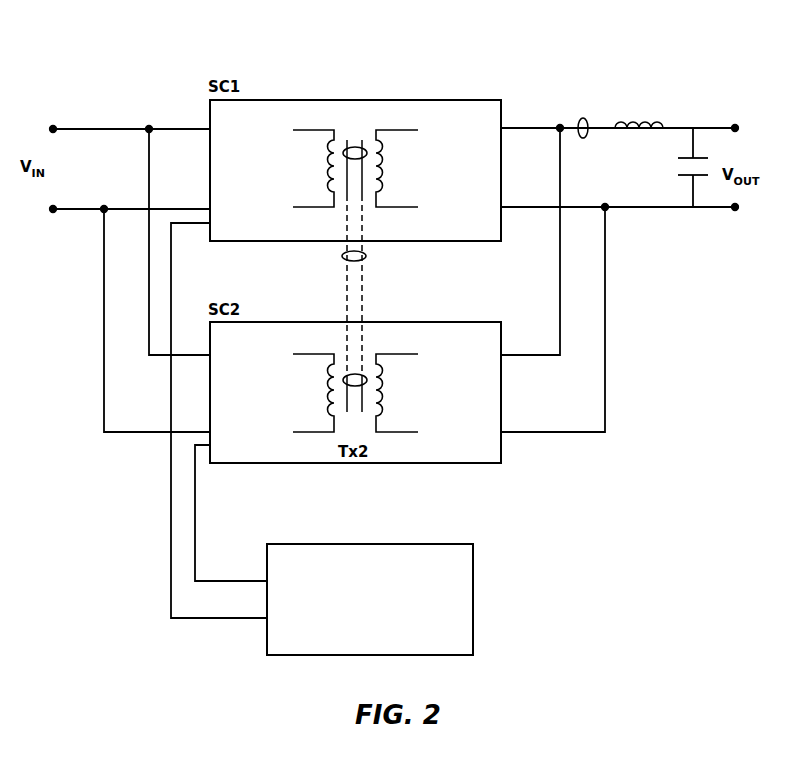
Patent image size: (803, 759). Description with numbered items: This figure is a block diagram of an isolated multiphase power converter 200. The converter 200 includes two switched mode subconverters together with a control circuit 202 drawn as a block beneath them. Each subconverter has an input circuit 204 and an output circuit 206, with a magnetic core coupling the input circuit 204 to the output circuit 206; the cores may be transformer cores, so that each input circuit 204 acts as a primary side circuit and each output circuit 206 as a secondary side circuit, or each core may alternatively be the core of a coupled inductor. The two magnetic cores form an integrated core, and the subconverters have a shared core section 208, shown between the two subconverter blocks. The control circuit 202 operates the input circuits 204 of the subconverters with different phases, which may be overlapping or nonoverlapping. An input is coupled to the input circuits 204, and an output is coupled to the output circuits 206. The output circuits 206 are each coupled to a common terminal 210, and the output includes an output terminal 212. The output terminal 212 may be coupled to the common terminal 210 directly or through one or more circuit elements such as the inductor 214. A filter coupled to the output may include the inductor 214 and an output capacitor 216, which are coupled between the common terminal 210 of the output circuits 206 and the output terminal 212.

The multiphase power converter 200 is at (556, 60).
The control circuit 202 is at (473, 595).
The input circuit 204 is at (263, 128).
The output circuit 206 is at (455, 126).
The shared core section 208 is at (366, 256).
The common terminal 210 is at (585, 117).
The output terminal 212 is at (735, 124).
The inductor 214 is at (641, 120).
The output capacitor 216 is at (686, 177).